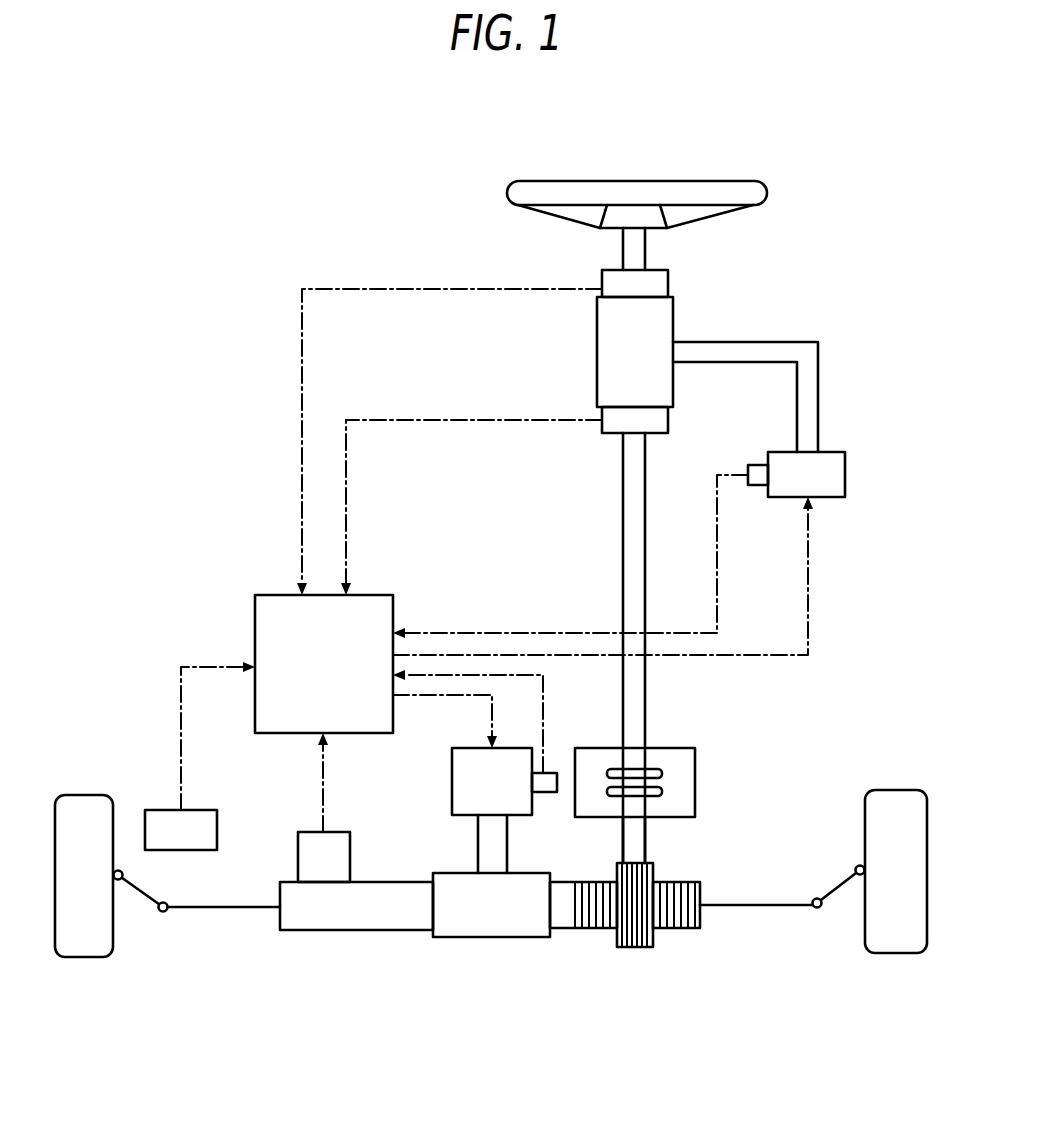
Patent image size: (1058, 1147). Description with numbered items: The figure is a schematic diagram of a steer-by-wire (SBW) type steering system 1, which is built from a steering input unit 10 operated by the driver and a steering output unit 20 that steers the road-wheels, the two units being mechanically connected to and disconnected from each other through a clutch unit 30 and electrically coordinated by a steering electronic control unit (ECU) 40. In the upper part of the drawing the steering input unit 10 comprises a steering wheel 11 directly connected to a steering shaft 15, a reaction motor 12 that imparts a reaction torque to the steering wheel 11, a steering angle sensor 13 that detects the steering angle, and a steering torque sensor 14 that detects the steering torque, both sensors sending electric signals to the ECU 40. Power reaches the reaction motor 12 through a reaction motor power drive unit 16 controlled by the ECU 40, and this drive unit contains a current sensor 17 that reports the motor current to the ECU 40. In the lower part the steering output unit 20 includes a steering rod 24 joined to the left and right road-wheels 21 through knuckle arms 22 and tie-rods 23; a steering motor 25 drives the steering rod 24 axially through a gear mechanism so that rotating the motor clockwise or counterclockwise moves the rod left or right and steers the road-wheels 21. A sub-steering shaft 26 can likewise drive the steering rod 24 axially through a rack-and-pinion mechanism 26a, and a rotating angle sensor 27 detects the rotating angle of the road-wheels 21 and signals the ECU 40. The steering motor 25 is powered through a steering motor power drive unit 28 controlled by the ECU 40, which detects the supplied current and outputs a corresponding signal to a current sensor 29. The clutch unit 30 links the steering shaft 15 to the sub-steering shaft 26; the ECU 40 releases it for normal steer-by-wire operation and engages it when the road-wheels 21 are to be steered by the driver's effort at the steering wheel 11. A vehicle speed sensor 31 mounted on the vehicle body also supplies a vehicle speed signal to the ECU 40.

The SBW type steering system 1 is at (808, 694).
The steering input unit 10 is at (842, 294).
The steering wheel 11 is at (713, 188).
The reaction motor 12 is at (660, 388).
The steering angle sensor 13 is at (660, 296).
The steering torque sensor 14 is at (612, 430).
The steering shaft 15 is at (645, 717).
The reaction motor power drive unit 16 is at (845, 470).
The current sensor 17 is at (748, 470).
The steering output unit 20 is at (571, 998).
The road-wheels 21 is at (80, 957).
The knuckle arms 22 is at (140, 893).
The tie-rods 23 is at (200, 907).
The steering rod 24 is at (330, 930).
The steering motor 25 is at (490, 937).
The sub-steering shaft 26 is at (645, 840).
The rack-and-pinion mechanism 26a is at (655, 947).
The rotating angle sensor 27 is at (350, 850).
The steering motor power drive unit 28 is at (510, 748).
The current sensor 29 is at (552, 772).
The clutch unit 30 is at (695, 775).
The vehicle speed sensor 31 is at (165, 810).
The steering electronic control unit 40 is at (395, 600).